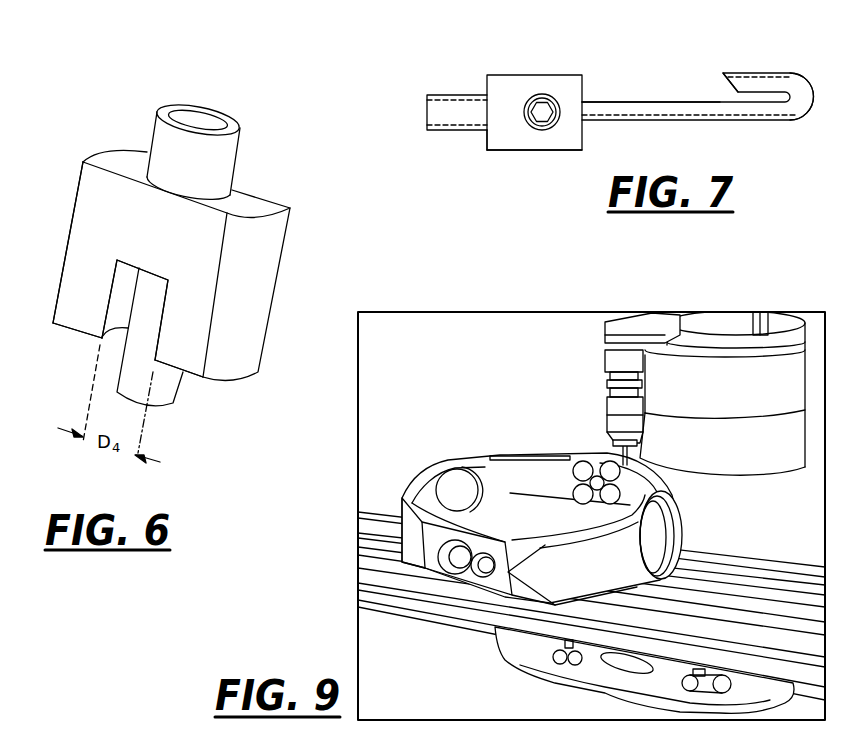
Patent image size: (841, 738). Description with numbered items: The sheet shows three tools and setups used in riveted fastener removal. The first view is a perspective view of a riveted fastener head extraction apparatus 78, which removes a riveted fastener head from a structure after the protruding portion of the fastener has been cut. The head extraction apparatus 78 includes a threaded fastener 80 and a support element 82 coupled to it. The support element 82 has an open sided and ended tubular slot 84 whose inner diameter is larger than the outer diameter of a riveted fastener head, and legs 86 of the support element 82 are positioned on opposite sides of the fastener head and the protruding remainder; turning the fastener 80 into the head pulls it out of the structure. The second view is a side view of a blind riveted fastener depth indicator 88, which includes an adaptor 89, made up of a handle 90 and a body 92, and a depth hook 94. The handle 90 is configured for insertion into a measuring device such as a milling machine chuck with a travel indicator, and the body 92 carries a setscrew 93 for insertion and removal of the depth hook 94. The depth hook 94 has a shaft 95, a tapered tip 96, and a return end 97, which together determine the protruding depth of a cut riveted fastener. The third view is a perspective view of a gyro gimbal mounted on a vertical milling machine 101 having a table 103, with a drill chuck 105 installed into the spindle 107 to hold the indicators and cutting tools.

In FIG. 6, the riveted fastener head extraction apparatus 78 is at (288, 210).
In FIG. 6, the fastener 80 is at (217, 157).
In FIG. 6, the support element 82 is at (72, 217).
In FIG. 6, the tubular slot 84 is at (107, 311).
In FIG. 6, the legs 86 is at (53, 324).
In FIG. 7, the blind riveted fastener depth indicator 88 is at (487, 75).
In FIG. 7, the adaptor 89 is at (483, 133).
In FIG. 7, the handle 90 is at (457, 132).
In FIG. 7, the body 92 is at (553, 151).
In FIG. 7, the setscrew 93 is at (547, 95).
In FIG. 7, the depth hook 94 is at (690, 120).
In FIG. 7, the shaft 95 is at (675, 110).
In FIG. 7, the tapered tip 96 is at (727, 87).
In FIG. 7, the return end 97 is at (780, 84).
In FIG. 9, the vertical milling machine 101 is at (784, 411).
In FIG. 9, the table 103 is at (780, 603).
In FIG. 9, the drill chuck 105 is at (630, 423).
In FIG. 9, the spindle 107 is at (605, 363).